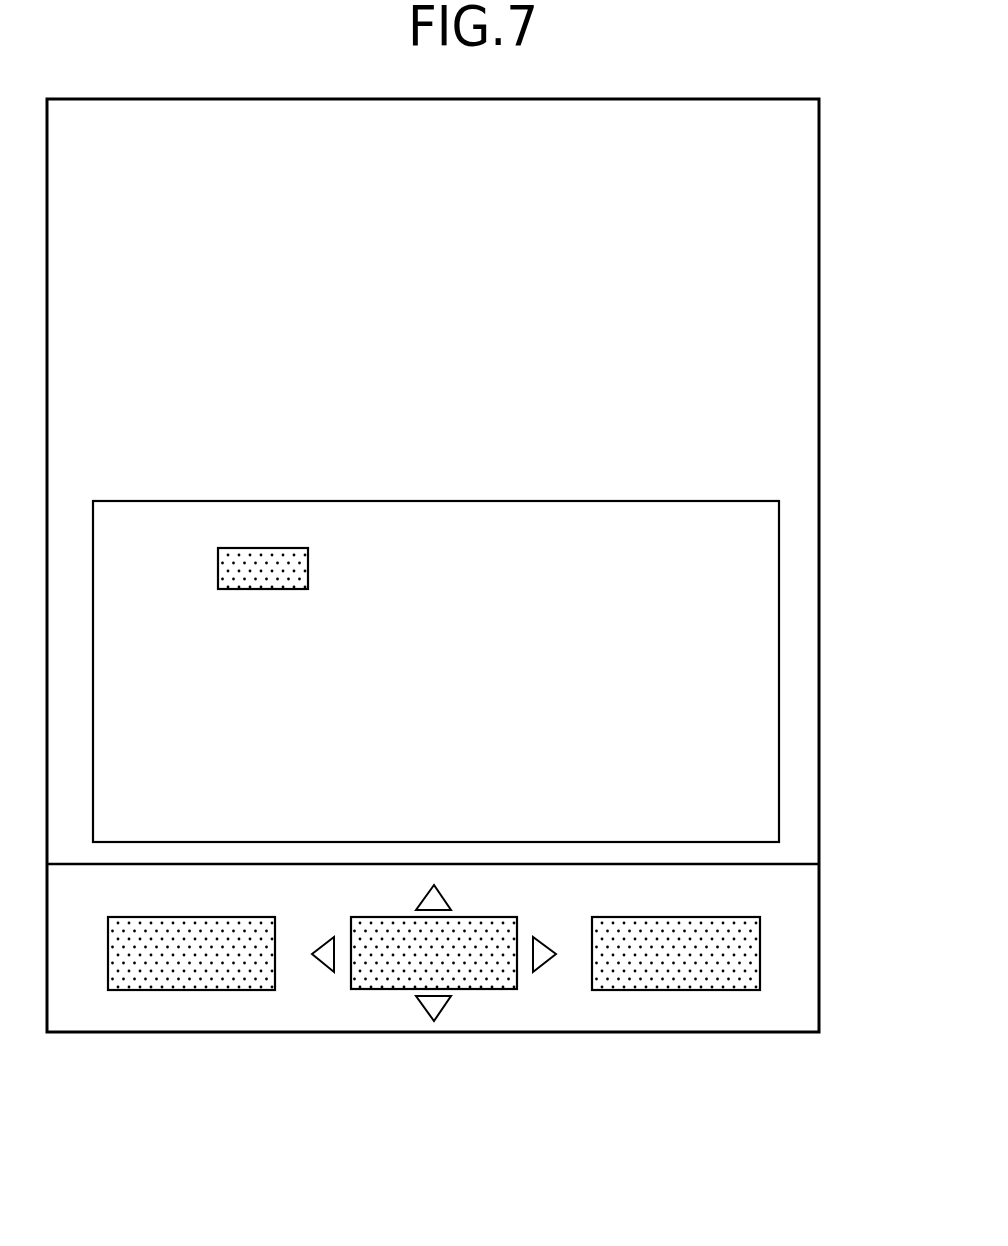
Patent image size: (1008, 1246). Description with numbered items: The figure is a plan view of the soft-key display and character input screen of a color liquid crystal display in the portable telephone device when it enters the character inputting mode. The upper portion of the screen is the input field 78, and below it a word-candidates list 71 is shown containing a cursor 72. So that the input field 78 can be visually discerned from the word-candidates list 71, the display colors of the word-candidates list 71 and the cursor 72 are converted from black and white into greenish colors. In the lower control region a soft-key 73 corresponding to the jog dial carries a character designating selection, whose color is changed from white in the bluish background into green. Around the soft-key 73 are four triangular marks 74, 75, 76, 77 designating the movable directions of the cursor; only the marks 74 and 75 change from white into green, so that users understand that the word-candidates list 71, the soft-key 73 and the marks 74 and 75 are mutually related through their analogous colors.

The word-candidates list 71 is at (748, 638).
The cursor 72 is at (263, 547).
The soft-key 73 is at (378, 990).
The triangular mark 74 is at (438, 893).
The triangular mark 75 is at (445, 1004).
The triangular mark 76 is at (323, 963).
The triangular mark 77 is at (552, 965).
The input field 78 is at (798, 396).